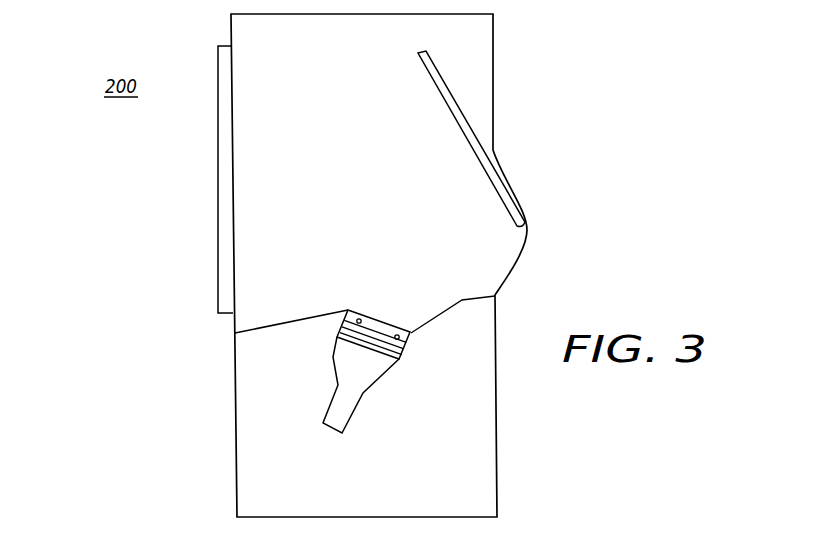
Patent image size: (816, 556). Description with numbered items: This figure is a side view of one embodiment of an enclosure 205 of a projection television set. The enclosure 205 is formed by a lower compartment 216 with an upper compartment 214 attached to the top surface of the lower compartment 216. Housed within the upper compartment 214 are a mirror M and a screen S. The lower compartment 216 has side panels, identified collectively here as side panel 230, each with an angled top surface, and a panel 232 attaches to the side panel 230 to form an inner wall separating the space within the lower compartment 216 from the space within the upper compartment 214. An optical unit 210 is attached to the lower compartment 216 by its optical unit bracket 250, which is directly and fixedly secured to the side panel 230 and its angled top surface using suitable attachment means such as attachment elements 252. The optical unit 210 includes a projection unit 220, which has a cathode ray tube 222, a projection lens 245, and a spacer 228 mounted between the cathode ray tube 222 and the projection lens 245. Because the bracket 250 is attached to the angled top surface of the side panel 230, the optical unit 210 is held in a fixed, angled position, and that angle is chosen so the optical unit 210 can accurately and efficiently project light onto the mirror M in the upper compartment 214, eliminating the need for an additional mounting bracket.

The enclosure 205 is at (498, 108).
The optical unit 210 is at (325, 378).
The upper compartment 214 is at (255, 33).
The lower compartment 216 is at (237, 401).
The projection unit 220 is at (355, 456).
The cathode ray tube 222 is at (360, 383).
The spacer 228 is at (401, 357).
The side panel 230 is at (480, 474).
The panel 232 is at (287, 321).
The projection lens 245 is at (343, 323).
The optical unit bracket 250 is at (407, 346).
The attachment elements 252 is at (398, 333).
The screen S is at (218, 193).
The mirror M is at (440, 97).